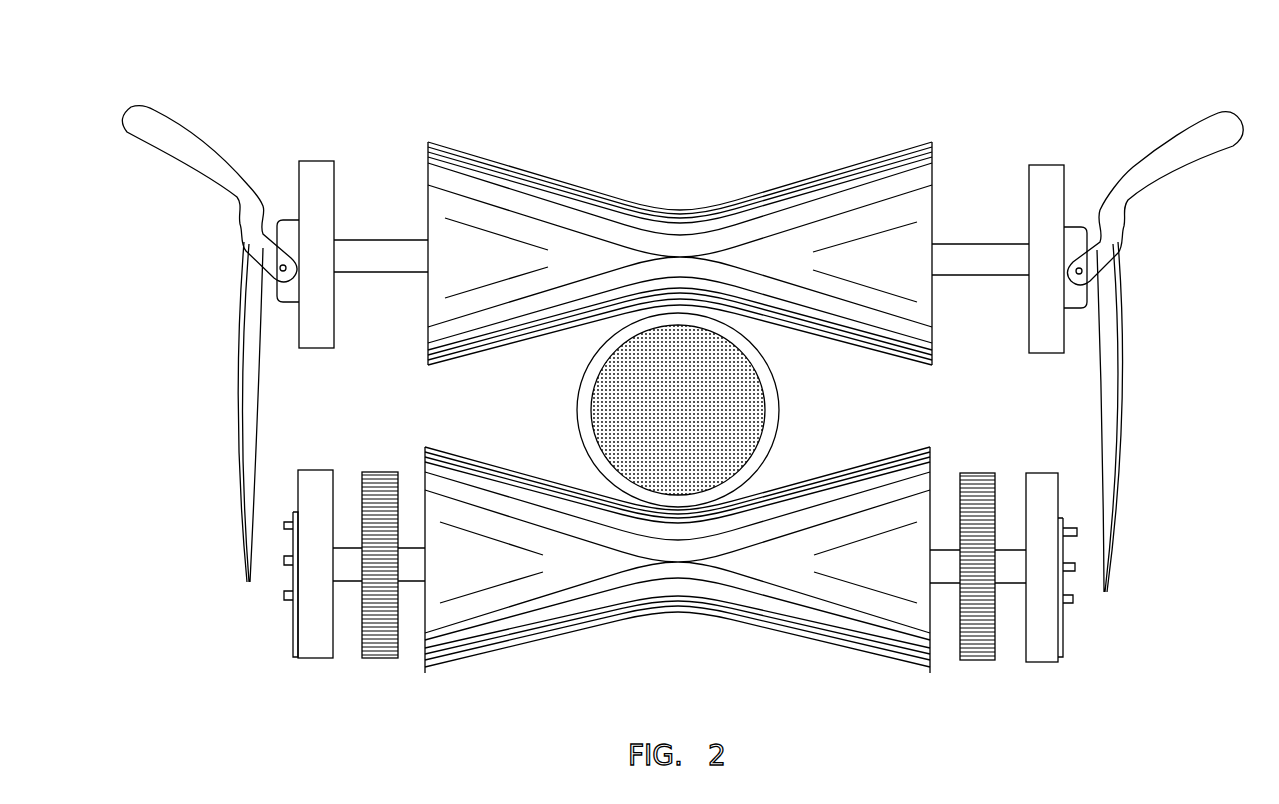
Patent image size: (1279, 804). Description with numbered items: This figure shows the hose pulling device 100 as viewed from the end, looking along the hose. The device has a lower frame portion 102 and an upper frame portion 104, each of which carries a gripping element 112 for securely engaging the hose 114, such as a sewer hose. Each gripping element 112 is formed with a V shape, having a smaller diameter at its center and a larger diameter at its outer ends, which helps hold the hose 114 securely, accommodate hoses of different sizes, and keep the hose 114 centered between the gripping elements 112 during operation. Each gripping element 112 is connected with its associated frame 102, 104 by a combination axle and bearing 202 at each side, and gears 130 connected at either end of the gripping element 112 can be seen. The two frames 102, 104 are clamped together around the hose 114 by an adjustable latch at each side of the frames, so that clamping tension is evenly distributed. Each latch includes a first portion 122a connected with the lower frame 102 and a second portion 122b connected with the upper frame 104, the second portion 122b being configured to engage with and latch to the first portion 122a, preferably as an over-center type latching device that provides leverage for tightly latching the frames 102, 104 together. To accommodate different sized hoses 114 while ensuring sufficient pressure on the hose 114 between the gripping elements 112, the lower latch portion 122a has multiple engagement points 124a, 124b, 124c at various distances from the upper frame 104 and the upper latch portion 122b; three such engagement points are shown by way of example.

The hose pulling device 100 is at (665, 375).
The lower frame portion 102 is at (310, 659).
The upper frame portion 104 is at (315, 160).
The gripping element 112 is at (775, 192).
The hose 114 is at (786, 412).
The first portion of adjustable latch 122a is at (294, 657).
The second portion of adjustable latch 122b is at (140, 106).
The engagement point 124a is at (287, 601).
The engagement point 124b is at (285, 567).
The engagement point 124c is at (286, 530).
The gear 130 is at (380, 659).
The combination axle and bearing 202 is at (352, 273).